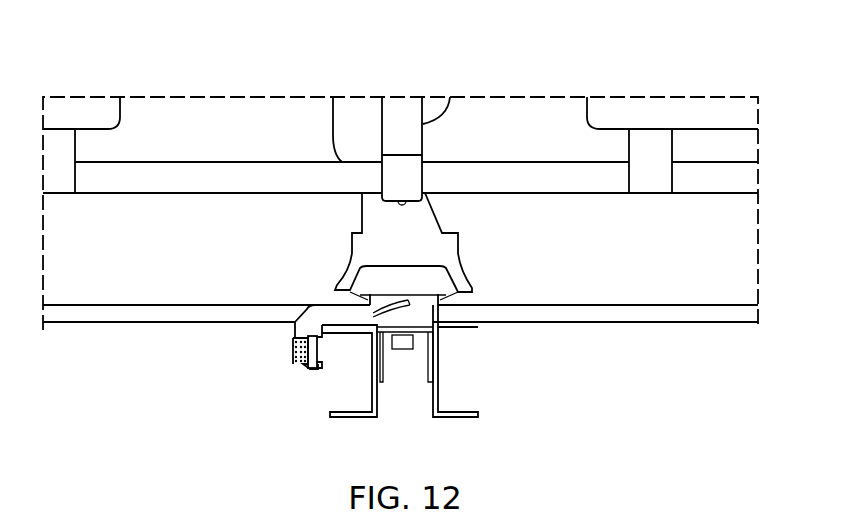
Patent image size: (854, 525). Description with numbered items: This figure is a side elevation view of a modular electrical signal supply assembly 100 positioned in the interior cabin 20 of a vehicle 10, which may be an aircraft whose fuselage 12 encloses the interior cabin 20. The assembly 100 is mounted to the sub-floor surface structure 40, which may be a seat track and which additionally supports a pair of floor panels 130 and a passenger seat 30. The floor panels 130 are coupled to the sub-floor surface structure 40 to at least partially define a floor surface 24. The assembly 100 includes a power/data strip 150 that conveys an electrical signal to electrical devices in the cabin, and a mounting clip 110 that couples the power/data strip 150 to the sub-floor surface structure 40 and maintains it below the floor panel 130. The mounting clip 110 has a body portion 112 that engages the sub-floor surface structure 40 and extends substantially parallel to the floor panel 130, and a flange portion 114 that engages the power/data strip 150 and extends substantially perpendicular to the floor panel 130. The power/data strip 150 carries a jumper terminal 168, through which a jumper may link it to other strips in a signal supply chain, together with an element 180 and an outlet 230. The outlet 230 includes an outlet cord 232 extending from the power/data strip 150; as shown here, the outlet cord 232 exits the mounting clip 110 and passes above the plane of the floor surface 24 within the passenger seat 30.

The vehicle 10 is at (305, 25).
The fuselage 12 is at (312, 51).
The interior cabin 20 is at (319, 79).
The floor surface 24 is at (553, 304).
The passenger seat 30 is at (137, 193).
The sub-floor surface structure 40 is at (464, 417).
The modular electrical signal supply assembly 100 is at (302, 262).
The mounting clip 110 is at (310, 374).
The body portion 112 is at (328, 304).
The flange portion 114 is at (290, 330).
The floor panel 130 is at (135, 322).
The power/data strip 150 is at (320, 348).
The jumper terminal 168 is at (295, 362).
The retainer 180 is at (320, 358).
The outlet 230 is at (384, 322).
The outlet cord 232 is at (400, 325).